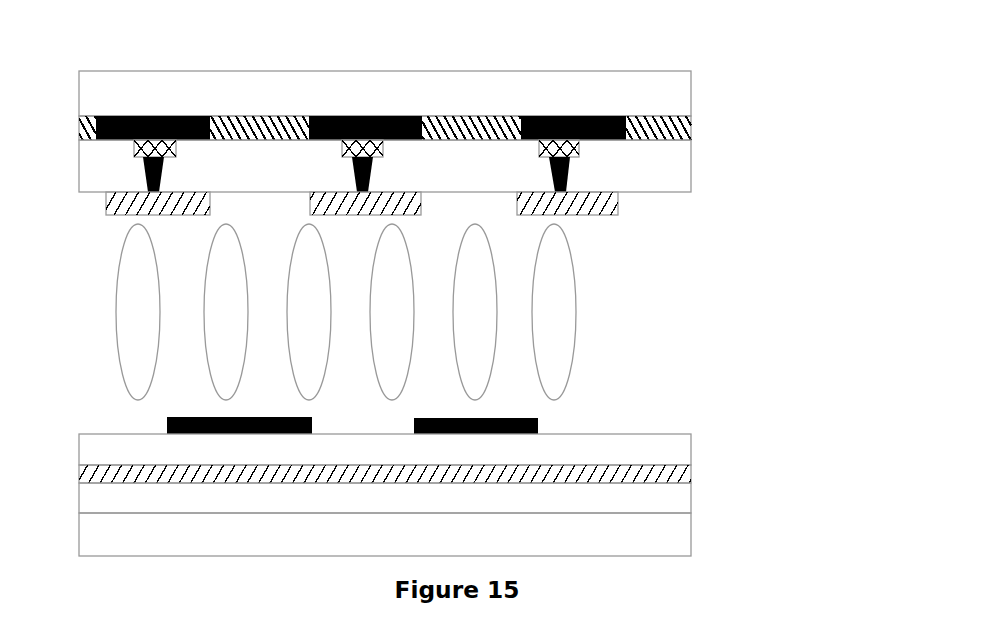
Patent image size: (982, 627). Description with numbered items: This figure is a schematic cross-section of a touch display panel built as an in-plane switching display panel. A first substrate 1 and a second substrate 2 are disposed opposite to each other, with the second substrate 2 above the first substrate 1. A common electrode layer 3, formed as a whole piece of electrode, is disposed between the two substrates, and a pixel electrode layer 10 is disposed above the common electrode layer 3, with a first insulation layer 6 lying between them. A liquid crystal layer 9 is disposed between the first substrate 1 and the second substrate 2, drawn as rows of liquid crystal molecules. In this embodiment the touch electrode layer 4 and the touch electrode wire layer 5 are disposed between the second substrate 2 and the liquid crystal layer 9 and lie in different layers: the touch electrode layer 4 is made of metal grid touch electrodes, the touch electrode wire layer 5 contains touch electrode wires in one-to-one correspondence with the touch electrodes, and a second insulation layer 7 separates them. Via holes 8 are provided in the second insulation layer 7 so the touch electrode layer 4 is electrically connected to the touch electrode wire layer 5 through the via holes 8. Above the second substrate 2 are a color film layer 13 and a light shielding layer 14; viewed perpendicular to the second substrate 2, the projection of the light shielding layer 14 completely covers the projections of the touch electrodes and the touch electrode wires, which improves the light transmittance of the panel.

The first substrate 1 is at (692, 533).
The second substrate 2 is at (688, 97).
The common electrode layer 3 is at (692, 473).
The touch electrode layer 4 is at (618, 203).
The touch electrode wire layer 5 is at (387, 147).
The first insulation layer 6 is at (692, 438).
The second insulation layer 7 is at (692, 155).
The via holes 8 is at (568, 173).
The liquid crystal layer 9 is at (577, 298).
The pixel electrode layer 10 is at (540, 424).
The color film layer 13 is at (692, 128).
The light shielding layer 14 is at (583, 115).